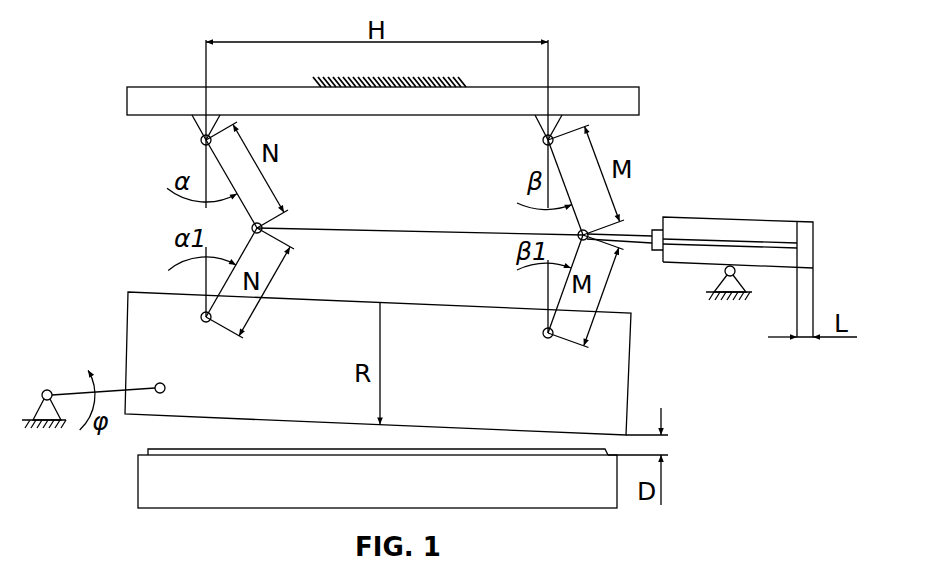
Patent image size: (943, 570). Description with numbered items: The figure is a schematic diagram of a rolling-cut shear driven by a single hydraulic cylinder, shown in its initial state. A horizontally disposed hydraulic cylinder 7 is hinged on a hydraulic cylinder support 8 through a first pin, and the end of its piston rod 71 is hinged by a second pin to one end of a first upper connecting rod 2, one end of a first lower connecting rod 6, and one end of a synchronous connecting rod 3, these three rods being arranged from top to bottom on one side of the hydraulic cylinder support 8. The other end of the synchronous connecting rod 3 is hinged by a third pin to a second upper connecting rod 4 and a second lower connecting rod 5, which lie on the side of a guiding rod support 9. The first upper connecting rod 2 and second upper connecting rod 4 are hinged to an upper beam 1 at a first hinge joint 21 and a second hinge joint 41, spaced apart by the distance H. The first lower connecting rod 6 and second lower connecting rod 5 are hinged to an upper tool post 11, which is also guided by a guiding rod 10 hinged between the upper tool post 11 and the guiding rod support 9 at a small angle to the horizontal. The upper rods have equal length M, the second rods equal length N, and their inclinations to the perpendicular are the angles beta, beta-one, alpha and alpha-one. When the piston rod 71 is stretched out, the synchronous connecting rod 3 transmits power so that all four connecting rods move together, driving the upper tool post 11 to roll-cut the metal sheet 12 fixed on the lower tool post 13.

The upper beam 1 is at (187, 103).
The first hinge joint 21 is at (551, 136).
The second hinge joint 41 is at (201, 139).
The first upper connecting rod 2 is at (569, 197).
The second upper connecting rod 4 is at (258, 225).
The synchronous connecting rod 3 is at (383, 229).
The second lower connecting rod 5 is at (212, 303).
The first lower connecting rod 6 is at (590, 239).
The piston rod 71 is at (632, 240).
The hydraulic cylinder 7 is at (682, 217).
The hydraulic cylinder support 8 is at (733, 267).
The guiding rod support 9 is at (45, 391).
The guiding rod 10 is at (106, 390).
The upper tool post 11 is at (578, 377).
The metal sheet 12 is at (617, 463).
The lower tool post 13 is at (140, 467).